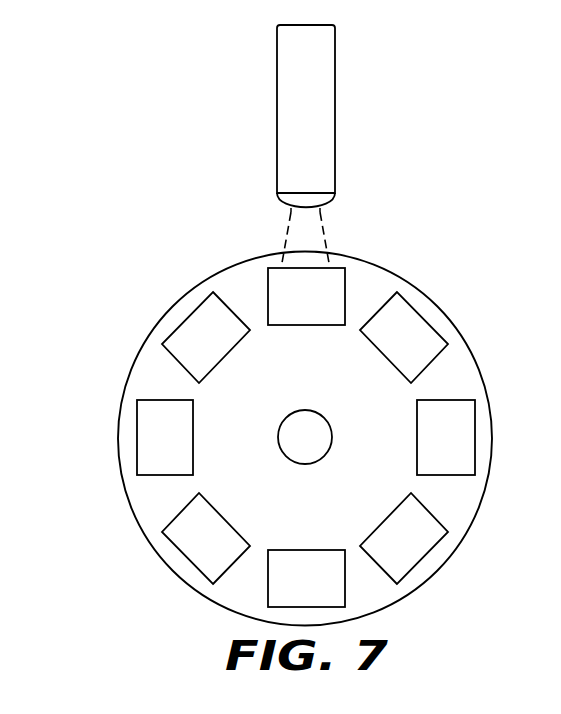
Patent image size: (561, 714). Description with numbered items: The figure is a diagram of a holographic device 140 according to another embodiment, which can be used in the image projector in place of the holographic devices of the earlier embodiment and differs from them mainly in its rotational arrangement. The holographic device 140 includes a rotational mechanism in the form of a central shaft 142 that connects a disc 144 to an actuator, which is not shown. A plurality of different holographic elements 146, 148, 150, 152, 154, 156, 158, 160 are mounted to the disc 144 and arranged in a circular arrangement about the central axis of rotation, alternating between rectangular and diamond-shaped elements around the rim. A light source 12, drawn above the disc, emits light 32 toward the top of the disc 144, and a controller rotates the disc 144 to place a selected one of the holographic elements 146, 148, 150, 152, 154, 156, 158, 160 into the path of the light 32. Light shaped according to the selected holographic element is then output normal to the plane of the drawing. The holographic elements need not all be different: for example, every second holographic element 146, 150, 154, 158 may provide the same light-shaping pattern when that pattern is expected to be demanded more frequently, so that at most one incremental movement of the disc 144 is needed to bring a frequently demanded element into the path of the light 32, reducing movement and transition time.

The light source 12 is at (294, 133).
The light 32 is at (294, 248).
The holographic device 140 is at (104, 306).
The central shaft 142 is at (289, 447).
The disc 144 is at (288, 373).
The holographic element 146 is at (289, 307).
The holographic element 148 is at (387, 347).
The holographic element 150 is at (429, 447).
The holographic element 152 is at (387, 548).
The holographic element 154 is at (289, 589).
The holographic element 156 is at (189, 548).
The holographic element 158 is at (148, 447).
The holographic element 160 is at (189, 347).